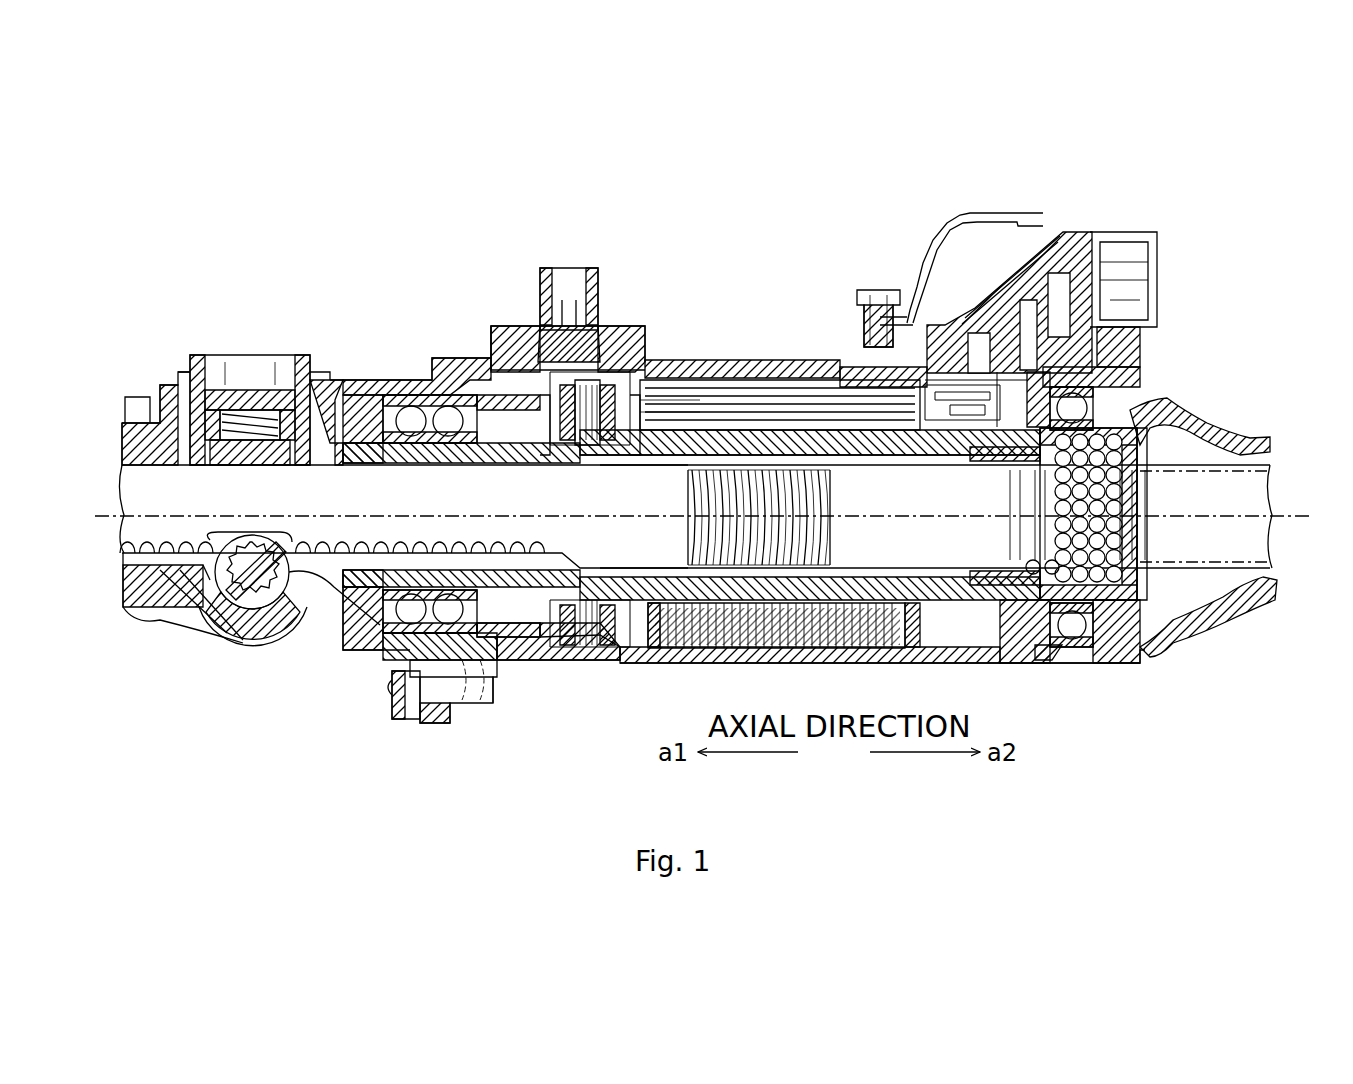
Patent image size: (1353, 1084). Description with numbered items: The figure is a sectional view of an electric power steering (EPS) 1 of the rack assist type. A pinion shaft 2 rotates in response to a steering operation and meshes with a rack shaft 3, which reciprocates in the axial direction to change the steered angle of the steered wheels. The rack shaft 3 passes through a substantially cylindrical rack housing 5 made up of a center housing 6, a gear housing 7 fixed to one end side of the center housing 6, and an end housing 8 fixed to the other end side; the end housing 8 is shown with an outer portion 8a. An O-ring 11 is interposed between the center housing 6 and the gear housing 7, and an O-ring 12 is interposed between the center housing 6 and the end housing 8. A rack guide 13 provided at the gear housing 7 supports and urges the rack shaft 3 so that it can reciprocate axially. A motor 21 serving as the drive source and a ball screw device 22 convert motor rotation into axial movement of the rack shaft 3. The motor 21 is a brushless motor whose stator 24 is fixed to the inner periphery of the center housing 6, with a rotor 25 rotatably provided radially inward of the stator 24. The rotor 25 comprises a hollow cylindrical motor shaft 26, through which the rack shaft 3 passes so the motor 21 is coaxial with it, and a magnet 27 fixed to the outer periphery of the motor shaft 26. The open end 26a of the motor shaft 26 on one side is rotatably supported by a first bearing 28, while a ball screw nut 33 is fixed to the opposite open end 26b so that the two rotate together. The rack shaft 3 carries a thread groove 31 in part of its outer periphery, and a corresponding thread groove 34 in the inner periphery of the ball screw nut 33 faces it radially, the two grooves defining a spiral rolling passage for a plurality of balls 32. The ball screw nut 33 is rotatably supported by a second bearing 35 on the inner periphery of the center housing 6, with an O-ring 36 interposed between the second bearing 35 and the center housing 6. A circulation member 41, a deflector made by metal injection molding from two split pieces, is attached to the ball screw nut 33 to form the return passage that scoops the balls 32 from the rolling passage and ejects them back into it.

The electric power steering (EPS) 1 is at (262, 170).
The pinion shaft 2 is at (243, 643).
The rack shaft 3 is at (160, 570).
The rack housing 5 is at (445, 352).
The center housing 6 is at (684, 362).
The gear housing 7 is at (372, 388).
The end housing 8 is at (1265, 430).
The housing flange portion 8a is at (1144, 385).
The O-ring 11 is at (468, 705).
The O-ring 12 is at (1112, 663).
The rack guide 13 is at (255, 378).
The motor 21 is at (738, 380).
The ball screw device 22 is at (1146, 432).
The stator 24 is at (640, 648).
The rotor 25 is at (780, 430).
The motor shaft 26 is at (610, 458).
The open end 26a is at (352, 468).
The open end 26b is at (1000, 462).
The magnet 27 is at (672, 462).
The first bearing 28 is at (385, 635).
The thread groove 31 is at (1149, 536).
The balls 32 is at (1108, 490).
The ball screw nut 33 is at (1140, 583).
The thread groove 34 is at (1022, 558).
The second bearing 35 is at (1045, 657).
The O-ring 36 is at (1068, 650).
The circulation member (deflector) 41 is at (1083, 390).